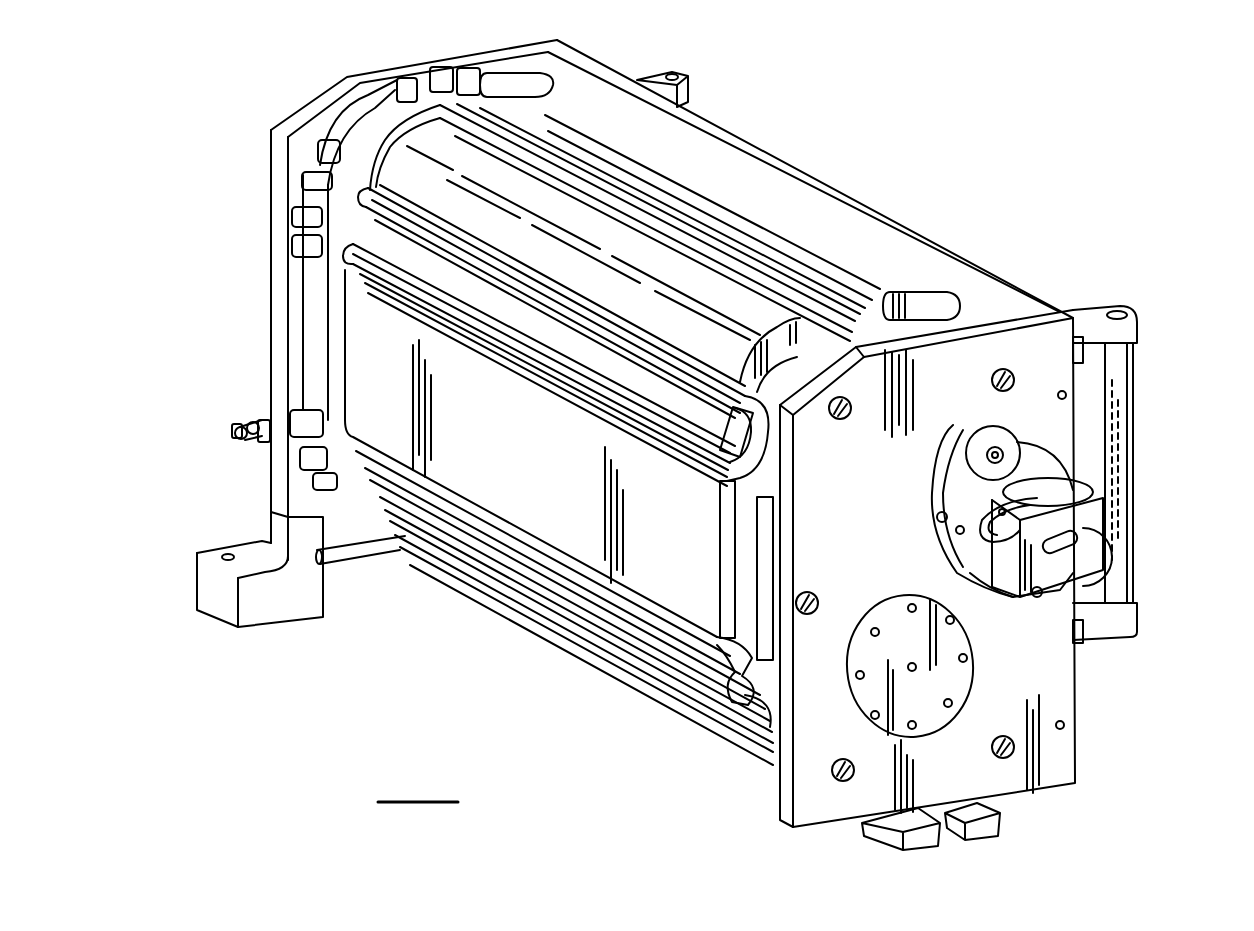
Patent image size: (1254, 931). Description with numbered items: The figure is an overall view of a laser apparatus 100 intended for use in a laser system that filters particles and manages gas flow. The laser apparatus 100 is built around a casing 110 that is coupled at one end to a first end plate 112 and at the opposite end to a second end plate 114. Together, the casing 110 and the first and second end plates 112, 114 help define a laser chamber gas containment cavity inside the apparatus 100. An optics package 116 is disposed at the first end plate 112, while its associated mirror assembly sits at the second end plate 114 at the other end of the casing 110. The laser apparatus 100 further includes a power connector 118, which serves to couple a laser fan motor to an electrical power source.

The laser apparatus 100 is at (920, 151).
The casing 110 is at (610, 260).
The first end plate 112 is at (1037, 692).
The second end plate 114 is at (313, 110).
The optics package 116 is at (1093, 528).
The power connector 118 is at (232, 425).